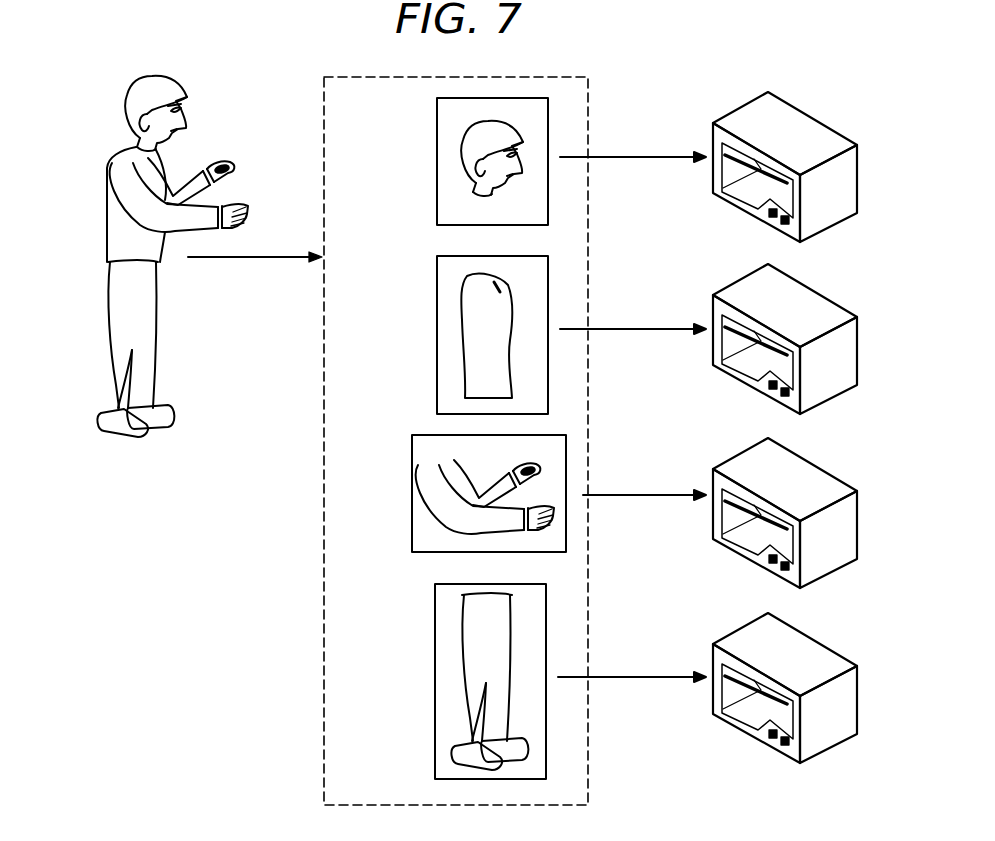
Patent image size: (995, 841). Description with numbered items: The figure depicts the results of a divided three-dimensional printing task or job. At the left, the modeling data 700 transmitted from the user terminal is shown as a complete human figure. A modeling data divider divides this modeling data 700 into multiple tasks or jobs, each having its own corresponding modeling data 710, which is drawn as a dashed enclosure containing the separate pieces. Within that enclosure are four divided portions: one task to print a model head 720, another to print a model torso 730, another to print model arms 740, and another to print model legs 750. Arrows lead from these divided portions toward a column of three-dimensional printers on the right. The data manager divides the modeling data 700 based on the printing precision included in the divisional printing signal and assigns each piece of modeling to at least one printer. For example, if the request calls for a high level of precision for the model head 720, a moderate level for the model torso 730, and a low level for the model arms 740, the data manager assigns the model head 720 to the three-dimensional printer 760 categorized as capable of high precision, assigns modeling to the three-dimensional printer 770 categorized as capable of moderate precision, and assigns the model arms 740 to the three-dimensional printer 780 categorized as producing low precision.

The 3D modeling data 700 is at (108, 244).
The 3D modeling data 710 is at (323, 650).
The model head 720 is at (437, 157).
The model torso 730 is at (437, 330).
The model arms 740 is at (412, 493).
The model legs 750 is at (435, 680).
The 3D printer 760 is at (813, 114).
The 3D printer 770 is at (813, 286).
The 3D printer 780 is at (813, 460).